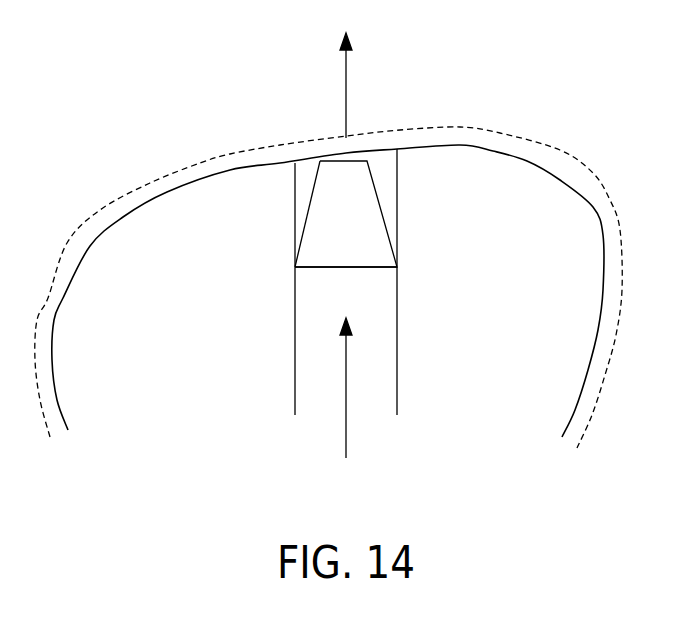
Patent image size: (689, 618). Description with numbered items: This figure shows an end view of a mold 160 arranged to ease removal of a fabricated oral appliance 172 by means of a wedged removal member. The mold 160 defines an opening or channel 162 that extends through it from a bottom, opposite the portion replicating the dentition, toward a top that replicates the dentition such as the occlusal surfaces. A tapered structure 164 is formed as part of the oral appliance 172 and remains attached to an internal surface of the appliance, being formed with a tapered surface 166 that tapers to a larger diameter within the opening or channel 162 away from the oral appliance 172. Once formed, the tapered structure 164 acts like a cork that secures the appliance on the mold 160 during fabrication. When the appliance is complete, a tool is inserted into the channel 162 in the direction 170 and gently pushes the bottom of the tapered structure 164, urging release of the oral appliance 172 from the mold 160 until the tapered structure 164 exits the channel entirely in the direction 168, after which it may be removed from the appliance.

The mold 160 is at (92, 247).
The opening or channel 162 is at (295, 308).
The tapered structure 164 is at (368, 223).
The tapered surface 166 is at (315, 195).
The direction 168 is at (348, 92).
The direction 170 is at (346, 443).
The oral appliance 172 is at (600, 173).